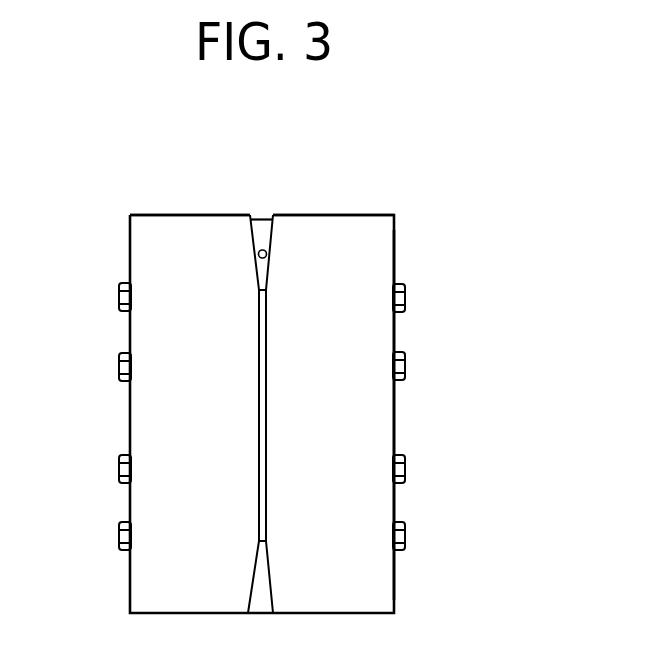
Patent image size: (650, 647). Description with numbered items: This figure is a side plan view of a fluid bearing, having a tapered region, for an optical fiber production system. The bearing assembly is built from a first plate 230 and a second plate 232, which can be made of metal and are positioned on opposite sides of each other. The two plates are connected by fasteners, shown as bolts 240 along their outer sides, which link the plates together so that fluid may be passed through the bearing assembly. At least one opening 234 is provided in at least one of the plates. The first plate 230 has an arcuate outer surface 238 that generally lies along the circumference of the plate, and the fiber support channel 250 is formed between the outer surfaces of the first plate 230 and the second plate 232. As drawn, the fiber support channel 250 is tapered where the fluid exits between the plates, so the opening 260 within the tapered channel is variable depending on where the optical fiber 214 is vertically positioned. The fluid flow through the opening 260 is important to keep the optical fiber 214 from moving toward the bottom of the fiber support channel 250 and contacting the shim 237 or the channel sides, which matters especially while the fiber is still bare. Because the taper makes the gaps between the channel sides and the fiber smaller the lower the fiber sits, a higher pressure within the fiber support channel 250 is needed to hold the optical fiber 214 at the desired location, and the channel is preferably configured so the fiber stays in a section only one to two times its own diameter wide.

The first plate 230 is at (130, 263).
The second plate 232 is at (394, 264).
The opening 234 is at (385, 215).
The arcuate outer surface 238 is at (154, 215).
The bolts 240 is at (405, 300).
The fiber support channel 250 is at (270, 211).
The opening 260 is at (263, 217).
The optical fiber 214 is at (267, 254).
The shim 237 is at (266, 290).